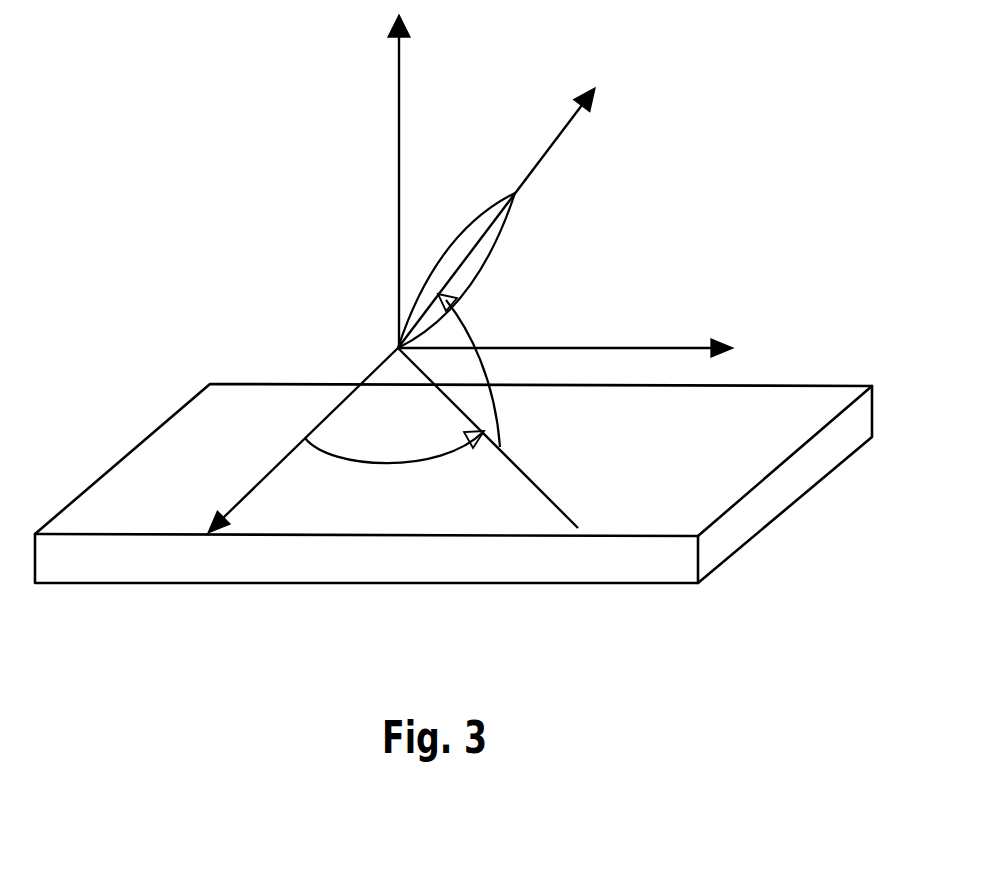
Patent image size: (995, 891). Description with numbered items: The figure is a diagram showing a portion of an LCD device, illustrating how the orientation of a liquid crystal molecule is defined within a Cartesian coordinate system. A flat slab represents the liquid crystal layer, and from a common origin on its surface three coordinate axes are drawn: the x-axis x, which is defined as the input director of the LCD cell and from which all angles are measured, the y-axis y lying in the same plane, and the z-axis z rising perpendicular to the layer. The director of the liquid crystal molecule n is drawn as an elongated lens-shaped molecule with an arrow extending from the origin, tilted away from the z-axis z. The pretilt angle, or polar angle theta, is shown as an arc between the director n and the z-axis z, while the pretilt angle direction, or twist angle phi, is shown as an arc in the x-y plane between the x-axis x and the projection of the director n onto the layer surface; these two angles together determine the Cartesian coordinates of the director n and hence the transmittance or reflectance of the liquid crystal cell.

The x-axis x is at (298, 440).
The y-axis y is at (574, 318).
The z-axis z is at (384, 181).
The director of liquid crystal molecule n is at (521, 201).